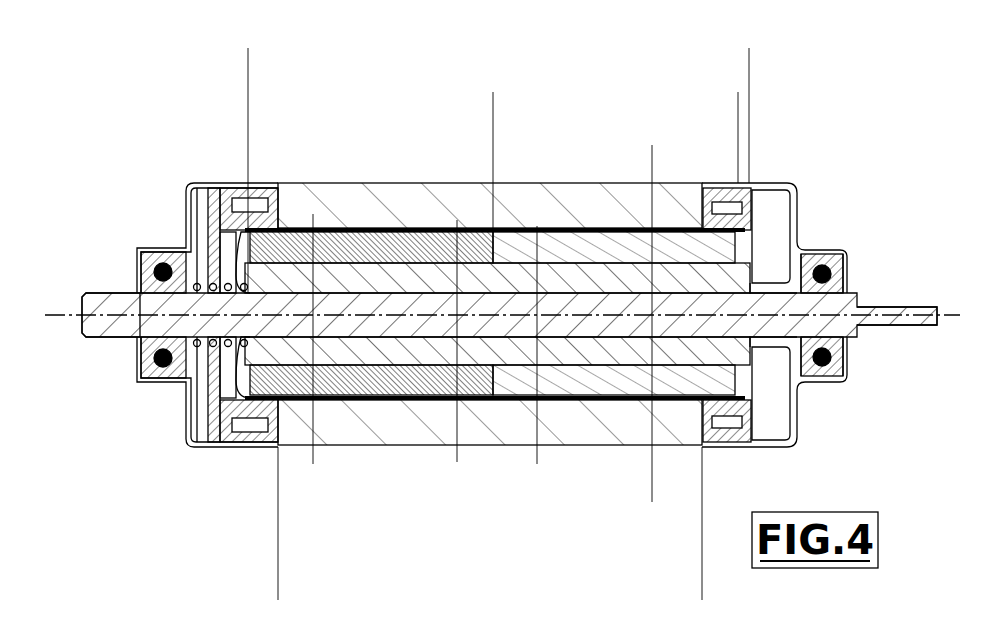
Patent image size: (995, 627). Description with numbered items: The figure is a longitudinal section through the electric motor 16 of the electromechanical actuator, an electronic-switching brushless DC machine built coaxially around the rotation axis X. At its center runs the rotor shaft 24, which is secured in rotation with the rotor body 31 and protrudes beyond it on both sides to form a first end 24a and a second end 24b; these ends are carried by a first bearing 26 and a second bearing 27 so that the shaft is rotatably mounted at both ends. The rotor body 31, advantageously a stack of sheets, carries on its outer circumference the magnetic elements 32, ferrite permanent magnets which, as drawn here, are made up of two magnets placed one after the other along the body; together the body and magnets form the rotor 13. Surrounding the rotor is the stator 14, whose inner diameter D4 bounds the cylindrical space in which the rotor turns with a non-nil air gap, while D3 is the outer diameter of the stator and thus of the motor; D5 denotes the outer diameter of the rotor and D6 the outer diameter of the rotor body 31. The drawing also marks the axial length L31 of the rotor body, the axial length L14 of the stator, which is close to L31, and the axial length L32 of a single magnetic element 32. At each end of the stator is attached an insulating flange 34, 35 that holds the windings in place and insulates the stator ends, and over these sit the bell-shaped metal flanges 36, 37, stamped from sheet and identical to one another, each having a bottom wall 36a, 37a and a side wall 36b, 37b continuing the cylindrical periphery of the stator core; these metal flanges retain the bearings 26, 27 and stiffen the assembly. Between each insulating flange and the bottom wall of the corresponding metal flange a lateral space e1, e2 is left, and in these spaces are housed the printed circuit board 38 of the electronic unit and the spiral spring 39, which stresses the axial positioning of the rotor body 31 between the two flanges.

The rotor 13 is at (392, 214).
The stator 14 is at (410, 428).
The electric motor 16 is at (791, 100).
The rotor shaft 24 is at (284, 368).
The first end 24a is at (113, 325).
The second end 24b is at (908, 320).
The first bearing 26 is at (158, 262).
The second bearing 27 is at (829, 262).
The rotor body 31 is at (618, 350).
The magnetic elements 32 is at (473, 392).
The insulating flange 34 is at (248, 442).
The insulating flange 35 is at (752, 448).
The metal flange 36 is at (167, 276).
The bottom wall 36a is at (163, 302).
The side wall 36b is at (213, 185).
The metal flange 37 is at (816, 277).
The bottom wall 37a is at (814, 268).
The side wall 37b is at (781, 183).
The printed circuit board 38 is at (217, 428).
The spiral spring 39 is at (182, 400).
The rotation axis X is at (66, 320).
The lateral space e1 is at (197, 456).
The lateral space e2 is at (771, 432).
The axial length of the rotor body L31 is at (749, 58).
The axial length of a magnetic element L32 is at (738, 102).
The axial length of the stator L14 is at (278, 587).
The outer diameter of the electric motor D3 is at (667, 325).
The inner diameter of the stator D4 is at (443, 341).
The outer diameter of the rotor D5 is at (329, 345).
The outer diameter of the rotor body D6 is at (551, 354).